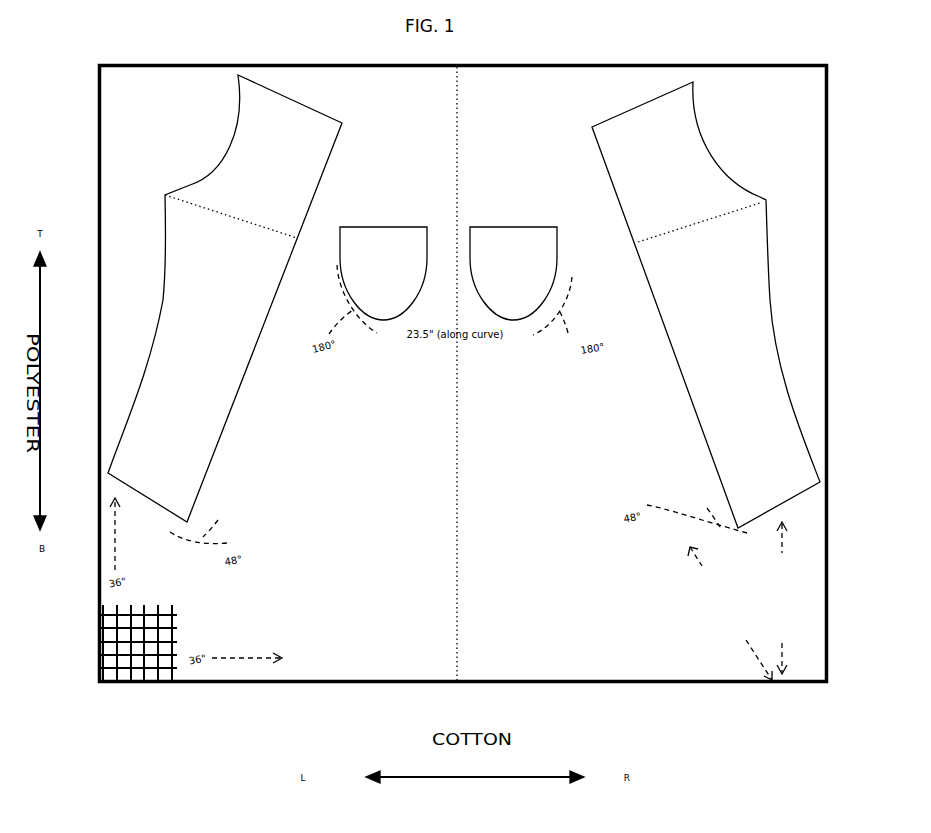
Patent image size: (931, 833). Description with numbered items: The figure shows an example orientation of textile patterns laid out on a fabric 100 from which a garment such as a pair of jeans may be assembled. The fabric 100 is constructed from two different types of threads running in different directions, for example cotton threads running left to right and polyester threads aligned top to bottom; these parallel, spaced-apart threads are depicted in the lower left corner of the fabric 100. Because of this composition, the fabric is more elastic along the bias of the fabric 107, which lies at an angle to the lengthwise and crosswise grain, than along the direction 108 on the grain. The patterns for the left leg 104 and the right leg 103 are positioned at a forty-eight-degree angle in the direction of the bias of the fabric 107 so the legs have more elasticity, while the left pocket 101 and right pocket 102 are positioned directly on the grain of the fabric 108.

The fabric 100 is at (685, 64).
The left pocket 101 is at (350, 227).
The right pocket 102 is at (537, 227).
The right leg 103 is at (745, 189).
The left leg 104 is at (190, 185).
The bias of the fabric 107 is at (710, 603).
The direction on the grain 108 is at (792, 602).